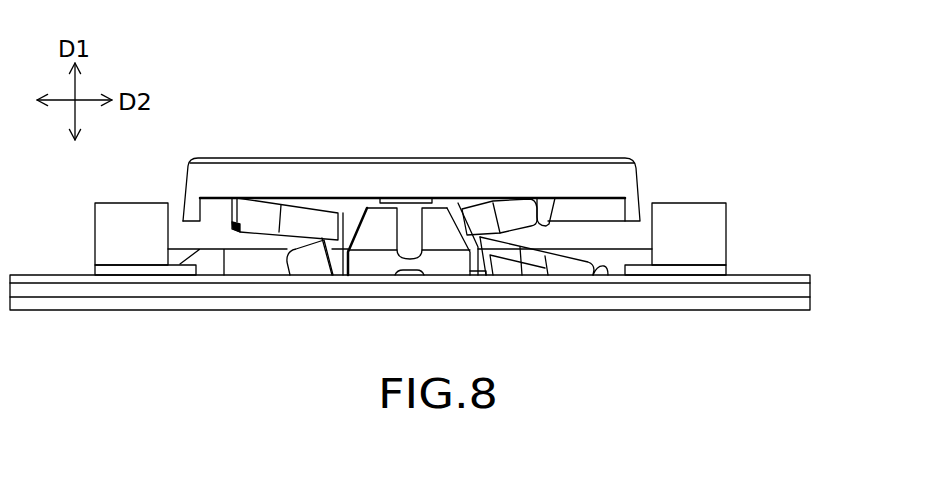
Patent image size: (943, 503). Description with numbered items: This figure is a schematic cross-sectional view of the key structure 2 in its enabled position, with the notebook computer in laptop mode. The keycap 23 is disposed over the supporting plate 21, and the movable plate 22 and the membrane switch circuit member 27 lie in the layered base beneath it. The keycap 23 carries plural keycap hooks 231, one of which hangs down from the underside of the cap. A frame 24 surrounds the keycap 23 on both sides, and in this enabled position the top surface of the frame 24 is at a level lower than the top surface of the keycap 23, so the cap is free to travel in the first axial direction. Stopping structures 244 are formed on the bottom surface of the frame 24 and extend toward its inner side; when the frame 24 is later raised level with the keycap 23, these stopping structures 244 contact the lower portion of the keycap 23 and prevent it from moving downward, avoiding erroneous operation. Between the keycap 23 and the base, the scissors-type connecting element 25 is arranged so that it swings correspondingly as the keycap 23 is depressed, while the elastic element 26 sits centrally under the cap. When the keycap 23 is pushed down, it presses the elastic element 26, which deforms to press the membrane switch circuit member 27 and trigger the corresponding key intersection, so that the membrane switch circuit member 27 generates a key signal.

The key structure 2 is at (284, 95).
The supporting plate 21 is at (710, 287).
The movable plate 22 is at (655, 300).
The keycap 23 is at (455, 163).
The keycap hook 231 is at (546, 200).
The frame 24 is at (691, 211).
The stopping structure 244 is at (112, 268).
The scissors-type connecting element 25 is at (318, 223).
The elastic element 26 is at (410, 213).
The membrane switch circuit member 27 is at (795, 277).